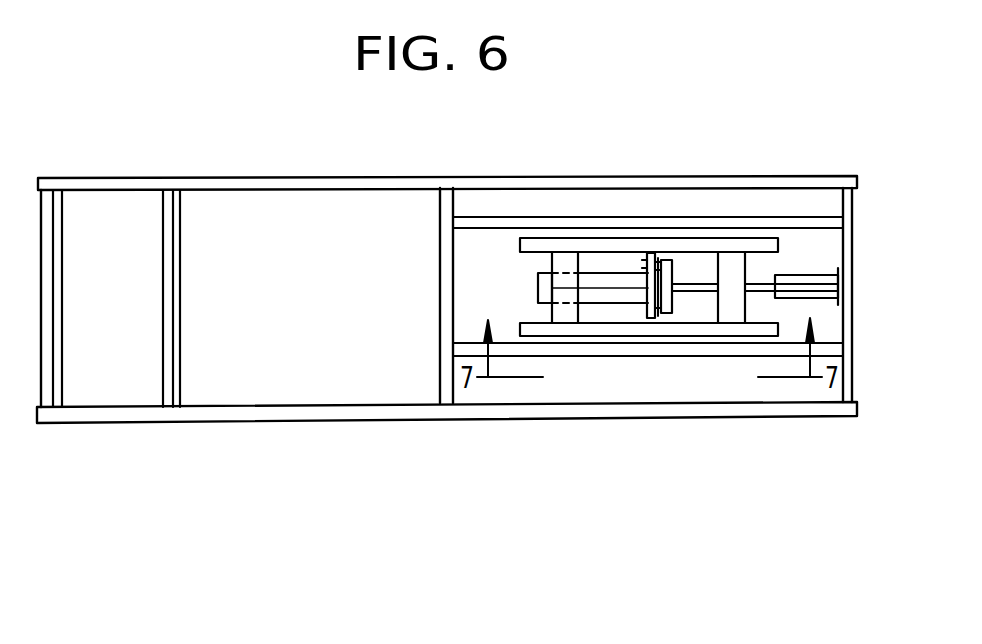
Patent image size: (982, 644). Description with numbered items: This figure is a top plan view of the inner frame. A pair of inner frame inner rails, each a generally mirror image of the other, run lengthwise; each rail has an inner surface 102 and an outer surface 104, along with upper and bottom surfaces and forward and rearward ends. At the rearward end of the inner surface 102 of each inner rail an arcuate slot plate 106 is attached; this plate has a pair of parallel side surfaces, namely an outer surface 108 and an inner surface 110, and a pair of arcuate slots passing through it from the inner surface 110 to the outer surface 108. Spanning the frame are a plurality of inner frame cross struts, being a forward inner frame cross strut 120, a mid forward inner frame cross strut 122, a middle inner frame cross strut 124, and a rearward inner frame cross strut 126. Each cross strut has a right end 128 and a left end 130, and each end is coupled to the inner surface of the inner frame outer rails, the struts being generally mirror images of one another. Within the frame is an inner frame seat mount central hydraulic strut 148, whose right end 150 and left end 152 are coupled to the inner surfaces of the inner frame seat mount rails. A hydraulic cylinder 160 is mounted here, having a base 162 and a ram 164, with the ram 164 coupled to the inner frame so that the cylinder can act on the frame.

The forward inner frame cross strut 120 is at (42, 198).
The mid forward inner frame cross strut 122 is at (152, 192).
The right end 128 is at (190, 192).
The left end 130 is at (187, 407).
The middle inner frame cross strut 124 is at (437, 203).
The rearward inner frame cross strut 126 is at (848, 206).
The inner surface 102 is at (518, 253).
The outer surface 104 is at (542, 240).
The arcuate slot plate 106 is at (746, 231).
The outer surface 108 is at (607, 348).
The inner surface 110 is at (617, 328).
The right end 150 is at (653, 242).
The ram 164 is at (696, 280).
The inner frame seat mount central hydraulic strut 148 is at (662, 314).
The left end 152 is at (654, 312).
The hydraulic cylinder 160 is at (597, 292).
The base 162 is at (585, 274).